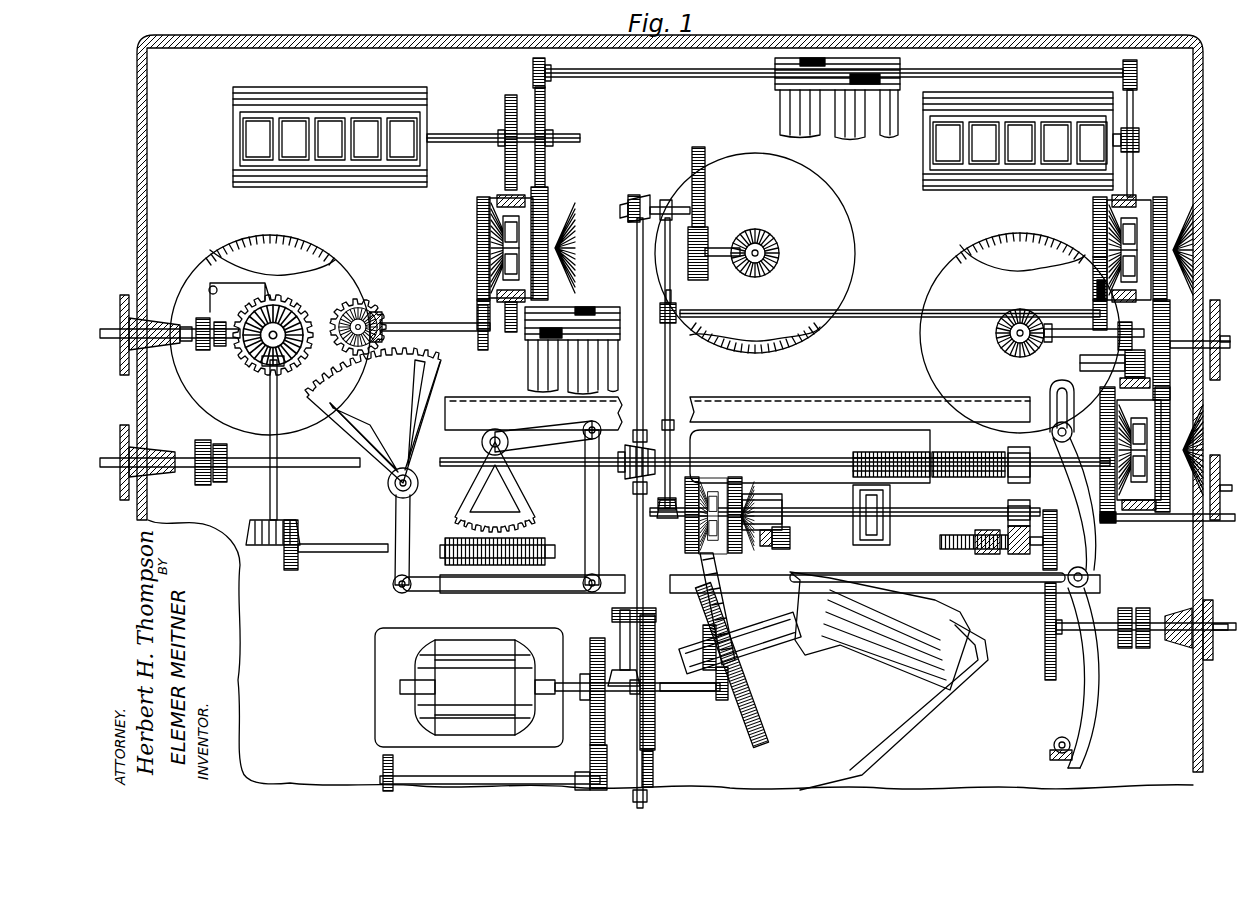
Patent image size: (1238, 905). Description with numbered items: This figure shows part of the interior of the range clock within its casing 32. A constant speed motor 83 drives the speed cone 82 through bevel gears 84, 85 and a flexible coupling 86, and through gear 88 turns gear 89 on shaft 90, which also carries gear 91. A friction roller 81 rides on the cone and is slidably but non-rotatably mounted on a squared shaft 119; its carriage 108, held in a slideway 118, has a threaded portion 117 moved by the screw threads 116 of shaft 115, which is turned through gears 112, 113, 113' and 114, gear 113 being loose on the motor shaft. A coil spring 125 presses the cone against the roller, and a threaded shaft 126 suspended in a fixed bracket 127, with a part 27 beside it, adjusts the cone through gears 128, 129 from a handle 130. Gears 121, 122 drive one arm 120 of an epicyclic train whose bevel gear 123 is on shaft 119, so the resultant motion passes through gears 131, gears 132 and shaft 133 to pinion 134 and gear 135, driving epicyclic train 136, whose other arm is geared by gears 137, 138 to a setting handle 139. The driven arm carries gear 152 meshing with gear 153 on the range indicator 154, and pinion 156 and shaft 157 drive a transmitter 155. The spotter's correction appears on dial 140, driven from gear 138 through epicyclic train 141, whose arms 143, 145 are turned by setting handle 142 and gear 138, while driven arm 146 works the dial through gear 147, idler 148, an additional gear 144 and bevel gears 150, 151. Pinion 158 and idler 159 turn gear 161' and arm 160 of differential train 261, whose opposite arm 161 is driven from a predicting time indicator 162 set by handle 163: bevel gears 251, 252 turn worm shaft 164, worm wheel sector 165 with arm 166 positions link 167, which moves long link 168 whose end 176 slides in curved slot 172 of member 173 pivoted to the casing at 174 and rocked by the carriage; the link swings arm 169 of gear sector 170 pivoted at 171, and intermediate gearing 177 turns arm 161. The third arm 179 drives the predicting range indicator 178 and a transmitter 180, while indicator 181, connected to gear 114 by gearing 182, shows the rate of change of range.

The casing 32 is at (150, 190).
The predicting range indicator 178 is at (428, 113).
The range indicator 154 is at (923, 185).
The shaft 157 is at (978, 73).
The pinion 158 is at (533, 73).
The pinion 156 is at (1137, 73).
The transmitter 155 is at (775, 66).
The gear 153 is at (1134, 140).
The gear 152 is at (1130, 198).
The gear 135 is at (1093, 213).
The epicyclic train 136 is at (1093, 238).
The gear 137 is at (1167, 262).
The pinion 134 is at (1096, 304).
The gear 138 is at (1170, 338).
The setting handle 139 is at (1218, 382).
The gear 144 is at (1138, 326).
The idler 148 is at (1122, 358).
The driven arm 146 is at (1118, 394).
The arm 143 is at (1100, 468).
The driving arm 145 is at (1162, 462).
The gear 147 is at (1160, 516).
The setting handle 142 is at (1220, 481).
The bevel gear 151 is at (1012, 352).
The bevel gear 150 is at (1048, 340).
The dial 140 is at (1020, 333).
The indicator 181 is at (755, 253).
The shaft 133 is at (890, 289).
The gears 132 is at (668, 300).
The intermediate gearing 182 is at (645, 196).
The link 167 is at (599, 508).
The third arm 179 is at (505, 190).
The idler 159 is at (548, 168).
The epicyclic train 261 is at (548, 220).
The arm 161 is at (460, 248).
The arm 160 is at (533, 243).
The gear 161' is at (536, 294).
The transmitter 180 is at (590, 313).
The predicting time indicator 162 is at (270, 335).
The bevel gear 251 is at (272, 401).
The intermediate gearing 177 is at (376, 316).
The handle 163 is at (121, 306).
The bevel gear 252 is at (282, 550).
The gear sector 170 is at (442, 366).
The pivot 171 is at (389, 487).
The arm 169 is at (412, 522).
The long link 168 is at (556, 593).
The slideway 118 is at (850, 398).
The carriage 108 is at (810, 450).
The shaft 115 is at (715, 458).
The gear 114 is at (633, 471).
The screw threads 116 is at (818, 456).
The threaded portion 117 is at (950, 452).
The fixed bracket 127 is at (1035, 465).
The arm 166 is at (543, 436).
The worm wheel sector 165 is at (534, 515).
The worm shaft 164 is at (540, 540).
The squared shaft 119 is at (845, 499).
The gears 131 is at (667, 519).
The bevel gear 123 is at (728, 500).
The arm 120 is at (722, 554).
The gear 122 is at (706, 555).
The friction roller 81 is at (853, 495).
The coil spring 125 is at (792, 538).
The collar 27 is at (1024, 500).
The threaded shaft 126 is at (989, 550).
The gear 128 is at (1060, 552).
The epicyclic train 141 is at (1072, 432).
The end of link 176 is at (1089, 577).
The curved slot 172 is at (1078, 693).
The pivot 174 is at (1070, 748).
The gear 129 is at (1045, 657).
The member 173 is at (1090, 664).
The handle 130 is at (1201, 613).
The speed cone 82 is at (889, 681).
The flexible coupling 86 is at (740, 644).
The gear 121 is at (762, 742).
The bevel gear 85 is at (708, 630).
The bevel gear 84 is at (727, 702).
The shaft 90 is at (487, 706).
The constant speed motor 83 is at (560, 687).
The gear 88 is at (605, 712).
The gear 89 is at (607, 762).
The gear 113 is at (668, 682).
The gear 112 is at (654, 766).
The gear 113' is at (620, 647).
The gear 91 is at (383, 766).